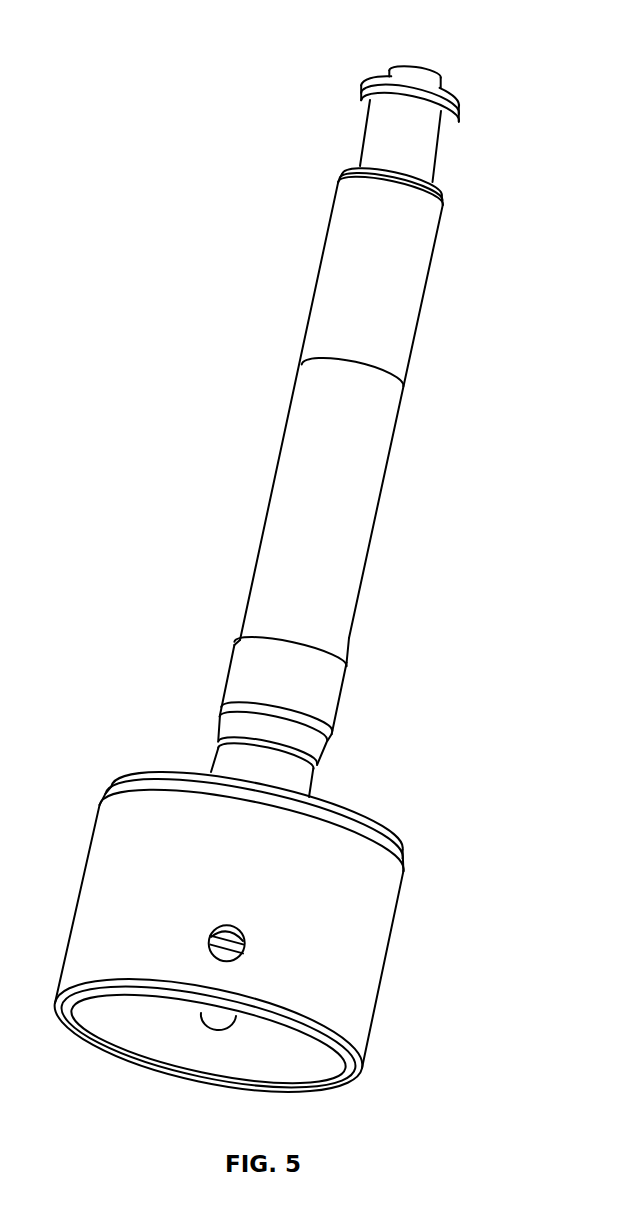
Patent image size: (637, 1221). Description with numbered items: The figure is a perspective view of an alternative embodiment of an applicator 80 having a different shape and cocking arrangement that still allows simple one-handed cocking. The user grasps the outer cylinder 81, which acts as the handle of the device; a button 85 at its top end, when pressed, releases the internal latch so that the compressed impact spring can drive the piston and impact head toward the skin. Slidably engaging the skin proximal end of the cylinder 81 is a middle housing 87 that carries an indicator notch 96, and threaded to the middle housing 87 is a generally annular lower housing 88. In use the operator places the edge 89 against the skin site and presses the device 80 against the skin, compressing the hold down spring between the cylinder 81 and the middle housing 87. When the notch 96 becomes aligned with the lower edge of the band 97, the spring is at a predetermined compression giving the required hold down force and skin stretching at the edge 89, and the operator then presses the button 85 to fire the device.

The applicator 80 is at (256, 59).
The outer cylinder 81 is at (367, 488).
The button 85 is at (419, 68).
The middle housing 87 is at (363, 813).
The lower housing 88 is at (360, 958).
The edge 89 is at (345, 1077).
The indicator notch 96 is at (316, 765).
The band 97 is at (326, 697).